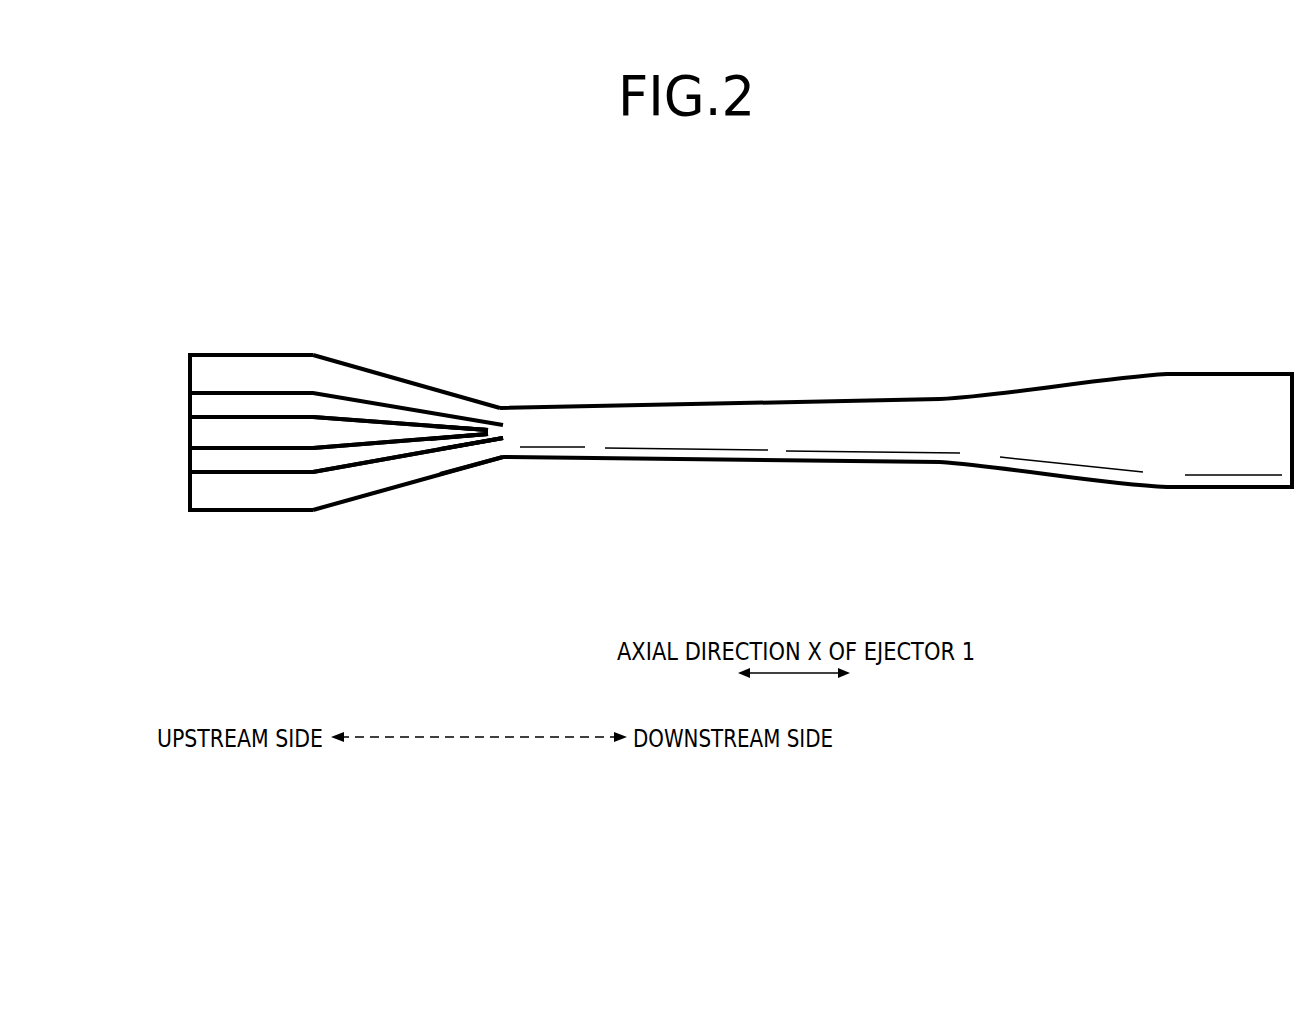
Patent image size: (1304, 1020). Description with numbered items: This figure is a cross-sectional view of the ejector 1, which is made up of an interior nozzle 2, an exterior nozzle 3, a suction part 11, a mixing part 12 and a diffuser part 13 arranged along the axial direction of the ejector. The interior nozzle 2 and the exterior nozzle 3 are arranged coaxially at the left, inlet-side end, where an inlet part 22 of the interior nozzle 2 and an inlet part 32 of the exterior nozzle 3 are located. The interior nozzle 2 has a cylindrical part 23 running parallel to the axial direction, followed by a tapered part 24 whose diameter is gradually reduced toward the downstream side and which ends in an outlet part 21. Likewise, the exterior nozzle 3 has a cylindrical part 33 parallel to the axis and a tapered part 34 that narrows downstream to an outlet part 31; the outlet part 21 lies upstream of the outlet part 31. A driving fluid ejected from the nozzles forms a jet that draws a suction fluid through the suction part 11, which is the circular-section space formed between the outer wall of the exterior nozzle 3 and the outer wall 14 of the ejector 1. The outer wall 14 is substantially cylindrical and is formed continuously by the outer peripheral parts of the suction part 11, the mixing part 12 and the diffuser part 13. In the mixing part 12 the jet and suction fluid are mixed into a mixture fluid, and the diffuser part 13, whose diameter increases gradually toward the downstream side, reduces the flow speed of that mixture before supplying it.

The ejector 1 is at (920, 252).
The interior nozzle 2 is at (280, 437).
The exterior nozzle 3 is at (283, 462).
The suction part 11 is at (337, 492).
The mixing part 12 is at (590, 435).
The diffuser part 13 is at (1069, 418).
The outer wall 14 is at (350, 360).
The outlet part of the interior nozzle 21 is at (490, 442).
The inlet part of the interior nozzle 22 is at (190, 435).
The cylindrical part of the interior nozzle 23 is at (258, 417).
The tapered part of the interior nozzle 24 is at (400, 423).
The outlet part of the exterior nozzle 31 is at (502, 447).
The inlet part of the exterior nozzle 32 is at (190, 462).
The cylindrical part of the exterior nozzle 33 is at (230, 475).
The tapered part of the exterior nozzle 34 is at (400, 460).